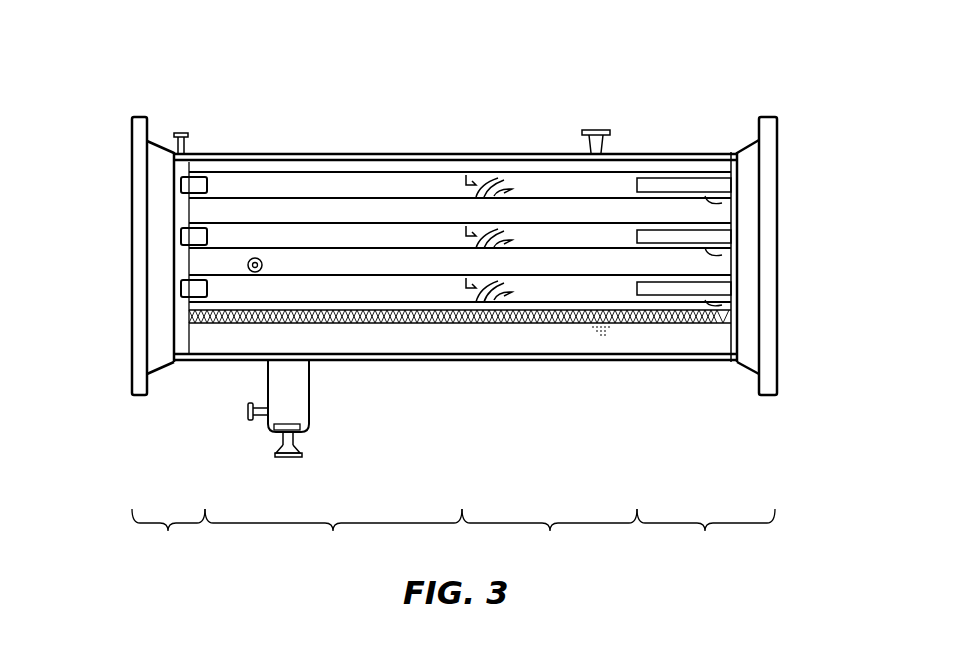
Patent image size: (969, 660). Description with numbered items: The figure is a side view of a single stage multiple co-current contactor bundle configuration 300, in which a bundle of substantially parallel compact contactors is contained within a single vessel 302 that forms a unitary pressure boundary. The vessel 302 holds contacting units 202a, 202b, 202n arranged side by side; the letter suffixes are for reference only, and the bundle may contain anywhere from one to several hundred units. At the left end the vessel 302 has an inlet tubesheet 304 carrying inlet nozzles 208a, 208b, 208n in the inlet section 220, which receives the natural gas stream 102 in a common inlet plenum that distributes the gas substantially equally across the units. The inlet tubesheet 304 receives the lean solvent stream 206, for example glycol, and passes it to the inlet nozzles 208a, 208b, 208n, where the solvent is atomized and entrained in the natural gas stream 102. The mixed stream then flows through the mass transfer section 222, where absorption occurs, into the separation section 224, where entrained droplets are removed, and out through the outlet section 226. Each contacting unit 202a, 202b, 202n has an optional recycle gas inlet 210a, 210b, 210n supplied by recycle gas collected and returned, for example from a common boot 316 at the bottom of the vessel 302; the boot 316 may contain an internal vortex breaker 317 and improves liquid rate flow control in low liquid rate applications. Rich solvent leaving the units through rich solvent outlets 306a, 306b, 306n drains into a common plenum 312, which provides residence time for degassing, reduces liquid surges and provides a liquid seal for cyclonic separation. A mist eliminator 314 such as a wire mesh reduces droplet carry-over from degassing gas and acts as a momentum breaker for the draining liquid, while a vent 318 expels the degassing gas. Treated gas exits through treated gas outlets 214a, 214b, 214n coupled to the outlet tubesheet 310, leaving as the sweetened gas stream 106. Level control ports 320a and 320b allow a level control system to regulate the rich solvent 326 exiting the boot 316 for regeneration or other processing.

The single stage multiple co-current contactor bundle configuration 300 is at (118, 34).
The vessel 302 is at (238, 153).
The inlet tubesheet 304 is at (181, 210).
The outlet tubesheet 310 is at (731, 163).
The contacting unit 202a is at (369, 171).
The contacting unit 202b is at (320, 223).
The contacting unit 202n is at (320, 275).
The recycle gas inlet 210a is at (466, 175).
The recycle gas inlet 210b is at (476, 226).
The recycle gas inlet 210n is at (476, 278).
The inlet nozzle 208a is at (181, 185).
The inlet nozzle 208b is at (181, 237).
The inlet nozzle 208n is at (181, 290).
The treated gas outlet 214a is at (737, 178).
The treated gas outlet 214b is at (737, 232).
The treated gas outlet 214n is at (737, 289).
The rich solvent outlet 306a is at (722, 203).
The rich solvent outlet 306b is at (722, 255).
The rich solvent outlet 306n is at (722, 305).
The mist eliminator 314 is at (447, 323).
The plenum 312 is at (530, 346).
The level control port 320b is at (255, 273).
The boot 316 is at (309, 378).
The vortex breaker 317 is at (296, 425).
The level control port 320a is at (250, 412).
The rich solvent 326 is at (288, 463).
The lean solvent stream 206 is at (180, 118).
The vent 318 is at (593, 128).
The natural gas stream 102 is at (112, 256).
The sweetened gas stream 106 is at (782, 256).
The inlet section 220 is at (168, 534).
The mass transfer section 222 is at (333, 534).
The separation section 224 is at (549, 534).
The outlet section 226 is at (706, 534).